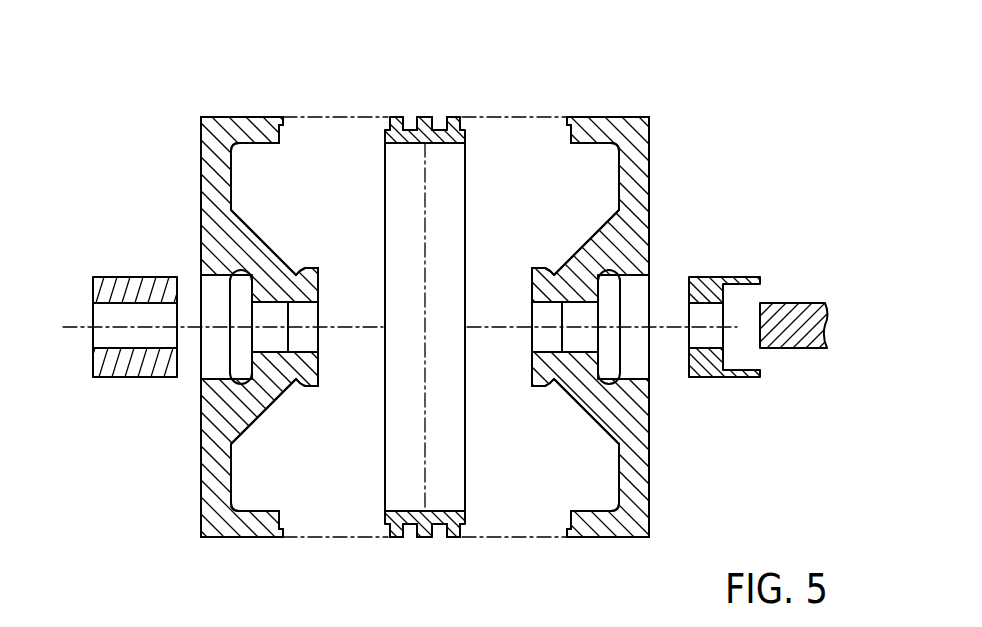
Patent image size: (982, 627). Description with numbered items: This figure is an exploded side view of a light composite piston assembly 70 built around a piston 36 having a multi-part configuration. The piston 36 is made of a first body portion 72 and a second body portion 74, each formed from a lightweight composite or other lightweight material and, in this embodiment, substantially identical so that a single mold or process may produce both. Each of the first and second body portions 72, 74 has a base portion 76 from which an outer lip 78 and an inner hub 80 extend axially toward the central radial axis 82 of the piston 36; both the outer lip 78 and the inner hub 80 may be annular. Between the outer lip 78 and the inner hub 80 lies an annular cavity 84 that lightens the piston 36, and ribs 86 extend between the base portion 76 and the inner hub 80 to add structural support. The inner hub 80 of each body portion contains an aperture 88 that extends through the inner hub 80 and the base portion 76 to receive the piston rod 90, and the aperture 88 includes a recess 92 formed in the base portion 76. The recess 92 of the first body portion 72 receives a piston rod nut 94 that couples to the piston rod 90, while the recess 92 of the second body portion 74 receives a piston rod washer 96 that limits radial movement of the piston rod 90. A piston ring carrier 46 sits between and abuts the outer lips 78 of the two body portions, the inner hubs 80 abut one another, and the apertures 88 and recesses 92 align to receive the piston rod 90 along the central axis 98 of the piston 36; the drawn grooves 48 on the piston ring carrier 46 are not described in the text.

The piston 36 is at (367, 279).
The light composite piston assembly 70 is at (547, 278).
The first body portion 72 is at (191, 151).
The second body portion 74 is at (661, 151).
The base portion 76 is at (212, 438).
The outer lip 78 is at (252, 126).
The inner hub 80 is at (305, 280).
The central radial axis 82 is at (432, 193).
The annular cavity 84 is at (240, 187).
The ribs 86 is at (258, 235).
The aperture 88 is at (306, 340).
The piston rod 90 is at (800, 307).
The recess 92 is at (214, 304).
The piston rod nut 94 is at (122, 288).
The piston rod washer 96 is at (714, 286).
The central axis 98 is at (543, 340).
The piston ring carrier 46 is at (452, 125).
The grooves 48 is at (412, 108).